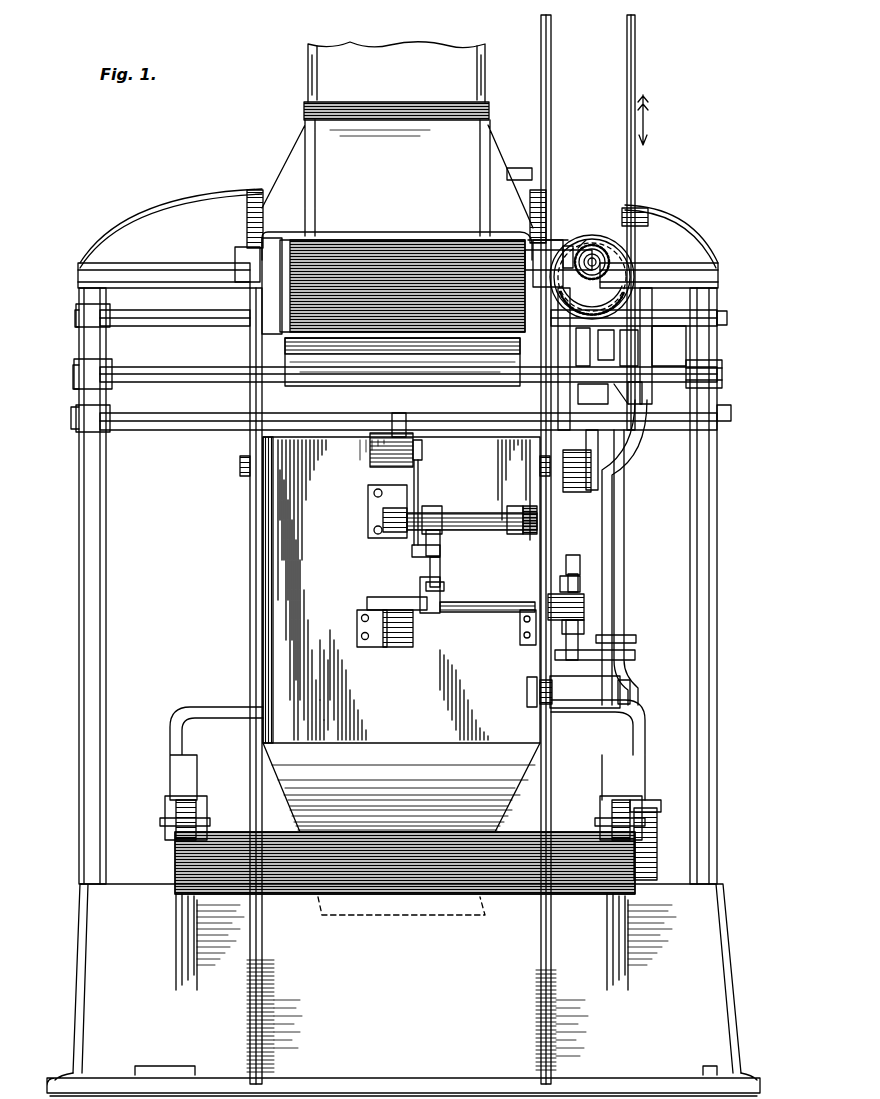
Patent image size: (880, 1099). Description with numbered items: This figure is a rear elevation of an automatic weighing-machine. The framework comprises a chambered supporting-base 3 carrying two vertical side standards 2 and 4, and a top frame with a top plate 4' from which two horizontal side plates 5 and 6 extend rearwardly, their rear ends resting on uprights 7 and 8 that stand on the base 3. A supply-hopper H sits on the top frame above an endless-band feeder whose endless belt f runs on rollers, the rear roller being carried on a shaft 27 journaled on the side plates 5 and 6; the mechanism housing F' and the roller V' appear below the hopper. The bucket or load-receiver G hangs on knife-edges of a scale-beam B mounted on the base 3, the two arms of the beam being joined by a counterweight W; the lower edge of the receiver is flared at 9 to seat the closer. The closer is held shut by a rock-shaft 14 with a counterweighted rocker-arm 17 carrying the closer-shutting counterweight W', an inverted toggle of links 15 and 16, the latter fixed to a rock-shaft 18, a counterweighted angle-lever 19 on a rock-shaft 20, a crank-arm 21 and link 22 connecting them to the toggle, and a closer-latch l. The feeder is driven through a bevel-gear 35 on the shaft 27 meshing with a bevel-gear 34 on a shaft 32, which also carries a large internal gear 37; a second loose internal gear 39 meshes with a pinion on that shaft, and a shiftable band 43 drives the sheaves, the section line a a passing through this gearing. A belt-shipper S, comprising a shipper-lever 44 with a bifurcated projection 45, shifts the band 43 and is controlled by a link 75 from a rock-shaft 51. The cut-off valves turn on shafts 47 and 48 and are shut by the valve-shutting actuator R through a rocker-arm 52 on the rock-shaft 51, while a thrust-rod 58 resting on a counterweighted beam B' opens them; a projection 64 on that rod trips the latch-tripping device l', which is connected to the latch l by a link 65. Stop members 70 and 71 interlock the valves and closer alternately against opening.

The vertical side standard 2 is at (730, 675).
The chambered supporting-base 3 is at (403, 990).
The vertical side standard 4 is at (105, 586).
The top plate or cross-beam 4' is at (398, 238).
The horizontal beam or side plate 5 is at (548, 190).
The horizontal beam or side plate 6 is at (257, 200).
The upright 7 is at (538, 944).
The upright 8 is at (264, 936).
The flared lower edge 9 is at (330, 905).
The rock-shaft 14 is at (238, 468).
The toggle-link 15 is at (420, 485).
The toggle-link 16 is at (442, 541).
The counterweighted rocker-arm 17 is at (403, 418).
The rock-shaft or rocker 18 is at (450, 519).
The counterweighted angle-lever 19 is at (413, 635).
The rock-shaft 20 is at (476, 606).
The crank-arm 21 is at (422, 596).
The link 22 is at (442, 570).
The shaft 27 is at (300, 245).
The shaft 32 is at (596, 252).
The bevel-gear 34 is at (585, 240).
The bevel-gear 35 is at (568, 246).
The internal gear 37 is at (592, 277).
The internal gear 39 is at (630, 301).
The belt or band 43 is at (628, 62).
The shipper-lever 44 is at (605, 494).
The band-engaging device or bifurcated projection 45 is at (643, 210).
The rock-shaft 47 is at (728, 316).
The shaft 48 is at (724, 376).
The rock-shaft 51 is at (732, 411).
The rocker-arm 52 is at (546, 401).
The thrust-rod 58 is at (624, 535).
The projection 64 is at (620, 638).
The link 65 is at (562, 585).
The stop device or member 70 is at (592, 444).
The stop device or member 71 is at (577, 471).
The link 75 is at (648, 404).
The dotted line a a is at (588, 232).
The scale-beam B is at (402, 770).
The counterweighted beam B' is at (655, 831).
The feed roller housing F' is at (397, 236).
The endless feed band or belt f is at (418, 260).
The bucket or load-receiver G is at (401, 590).
The supply-hopper H is at (397, 139).
The valve-shutting actuator R is at (620, 357).
The belt-shipper S is at (648, 349).
The roller V' is at (402, 362).
The counterweight W is at (425, 911).
The counterweight W' is at (378, 450).
The closer-latch l is at (573, 567).
The latch-tripping device l' is at (569, 664).